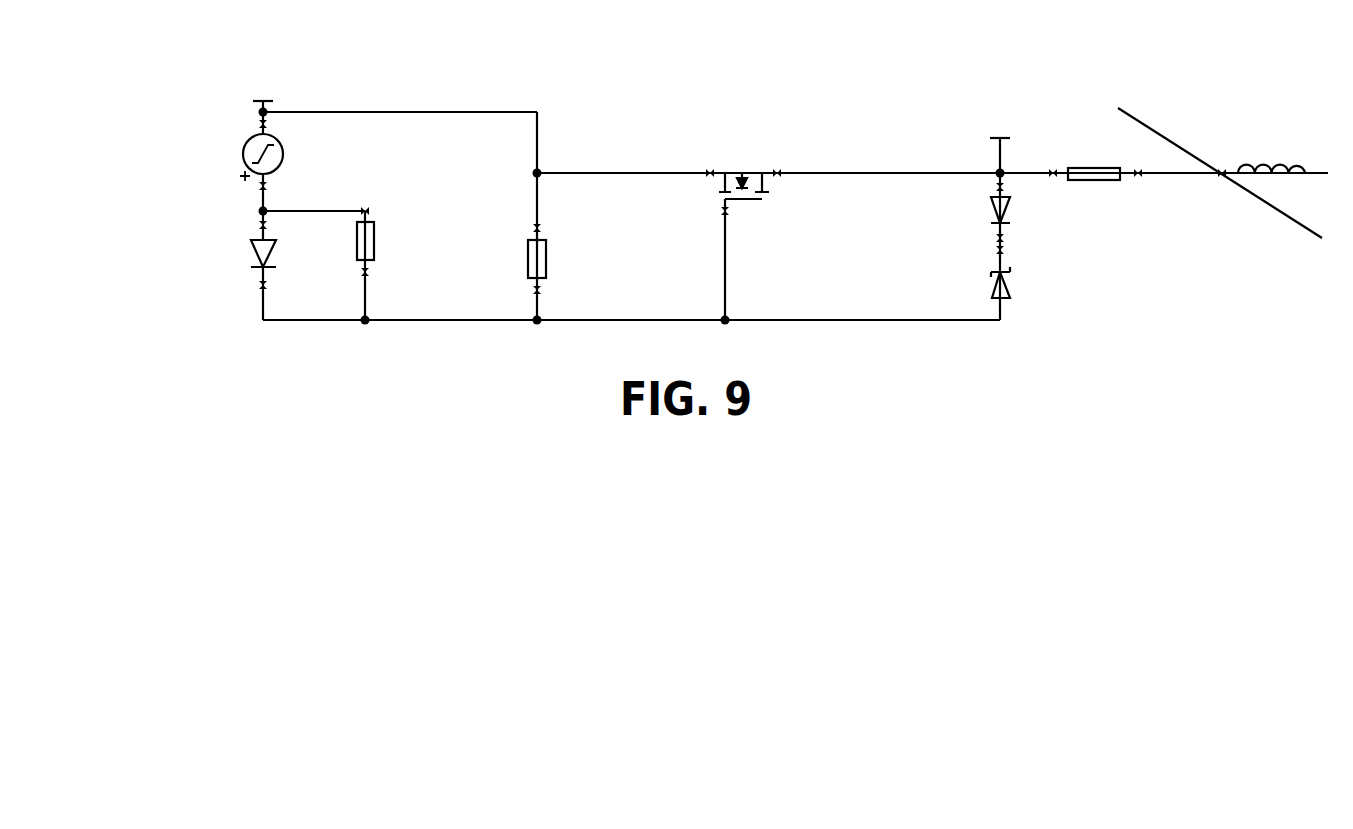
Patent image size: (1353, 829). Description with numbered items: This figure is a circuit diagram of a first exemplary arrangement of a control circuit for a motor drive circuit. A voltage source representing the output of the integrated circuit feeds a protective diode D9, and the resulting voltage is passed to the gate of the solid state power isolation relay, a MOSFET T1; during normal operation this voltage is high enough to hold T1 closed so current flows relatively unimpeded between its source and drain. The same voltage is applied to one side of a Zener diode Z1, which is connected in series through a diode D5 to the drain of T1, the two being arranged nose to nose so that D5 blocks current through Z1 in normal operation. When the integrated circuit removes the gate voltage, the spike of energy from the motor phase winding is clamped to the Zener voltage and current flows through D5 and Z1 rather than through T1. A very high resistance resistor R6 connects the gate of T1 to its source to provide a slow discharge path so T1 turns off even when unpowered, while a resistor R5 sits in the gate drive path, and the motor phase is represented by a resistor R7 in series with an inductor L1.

The diode 1N1183 D9 is at (201, 255).
The resistor 1k R5 is at (383, 241).
The resistor 1M R6 is at (523, 259).
The MOSFET STL285N4F7AG T1 is at (742, 185).
The diode 1N1183 D5 is at (1054, 212).
The zener diode MM3Z30V Z1 is at (985, 245).
The resistor 13m R7 is at (1095, 160).
The inductor 87.5u L1 is at (1265, 157).